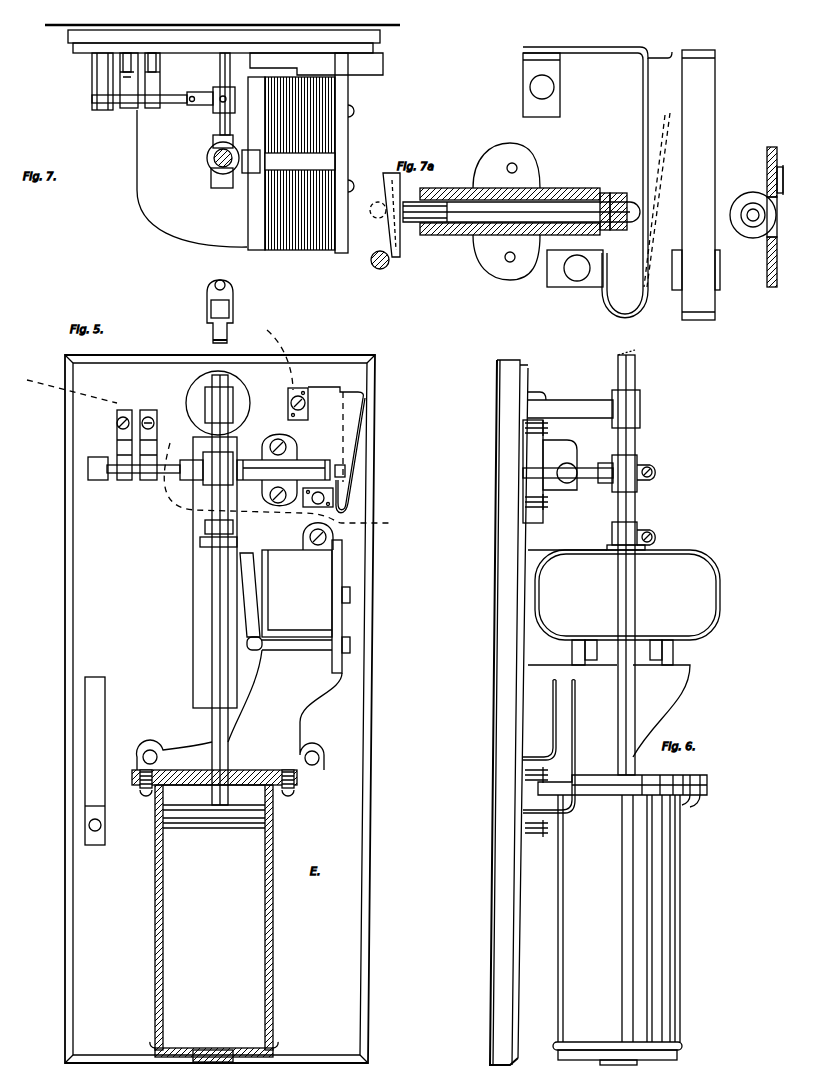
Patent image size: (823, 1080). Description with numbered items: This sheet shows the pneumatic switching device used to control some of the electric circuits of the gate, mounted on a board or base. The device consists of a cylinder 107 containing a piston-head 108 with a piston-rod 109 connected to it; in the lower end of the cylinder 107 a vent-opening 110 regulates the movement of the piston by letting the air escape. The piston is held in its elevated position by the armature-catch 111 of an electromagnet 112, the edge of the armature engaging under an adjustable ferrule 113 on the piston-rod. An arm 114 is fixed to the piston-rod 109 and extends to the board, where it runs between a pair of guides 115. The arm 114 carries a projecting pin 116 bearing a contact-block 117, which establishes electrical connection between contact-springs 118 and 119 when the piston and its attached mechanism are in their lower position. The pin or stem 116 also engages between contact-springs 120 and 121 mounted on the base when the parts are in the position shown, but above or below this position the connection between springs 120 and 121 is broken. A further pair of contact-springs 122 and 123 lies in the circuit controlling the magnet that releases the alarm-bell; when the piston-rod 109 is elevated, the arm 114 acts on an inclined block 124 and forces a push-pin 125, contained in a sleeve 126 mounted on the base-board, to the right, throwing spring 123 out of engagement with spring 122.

In FIG. 5, the cylinder 107 is at (214, 921).
In FIG. 5, the piston-head 108 is at (213, 818).
In FIG. 7, the piston-rod 109 is at (210, 160).
In FIG. 5, the piston-rod 109 is at (213, 725).
In FIG. 6, the piston-rod 109 is at (623, 508).
In FIG. 5, the vent-opening 110 is at (213, 1048).
In FIG. 5, the armature-catch 111 is at (247, 583).
In FIG. 6, the armature-catch 111 is at (627, 607).
In FIG. 5, the electromagnet 112 is at (297, 580).
In FIG. 5, the adjustable ferrule 113 is at (205, 539).
In FIG. 7A, the arm 114 is at (371, 262).
In FIG. 6, the arm 114 is at (590, 482).
In FIG. 5, the guides 115 is at (200, 616).
In FIG. 7, the projecting pin 116 is at (176, 103).
In FIG. 5, the projecting pin 116 is at (166, 465).
In FIG. 5, the contact-block 117 is at (88, 468).
In FIG. 6, the contact-spring 118 is at (553, 723).
In FIG. 5, the contact-spring 119 is at (95, 761).
In FIG. 6, the contact-spring 119 is at (572, 736).
In FIG. 5, the contact-spring 120 is at (124, 440).
In FIG. 6, the contact-spring 120 is at (578, 451).
In FIG. 5, the contact-spring 121 is at (148, 444).
In FIG. 6, the contact-spring 121 is at (572, 443).
In FIG. 7, the contact-spring 122 is at (358, 68).
In FIG. 7A, the contact-spring 122 is at (605, 52).
In FIG. 5, the contact-spring 122 is at (325, 403).
In FIG. 7A, the contact-spring 123 is at (643, 102).
In FIG. 5, the contact-spring 123 is at (362, 454).
In FIG. 7A, the inclined block 124 is at (398, 247).
In FIG. 7A, the push-pin 125 is at (530, 210).
In FIG. 7A, the sleeve 126 is at (568, 196).
In FIG. 5, the sleeve 126 is at (300, 467).